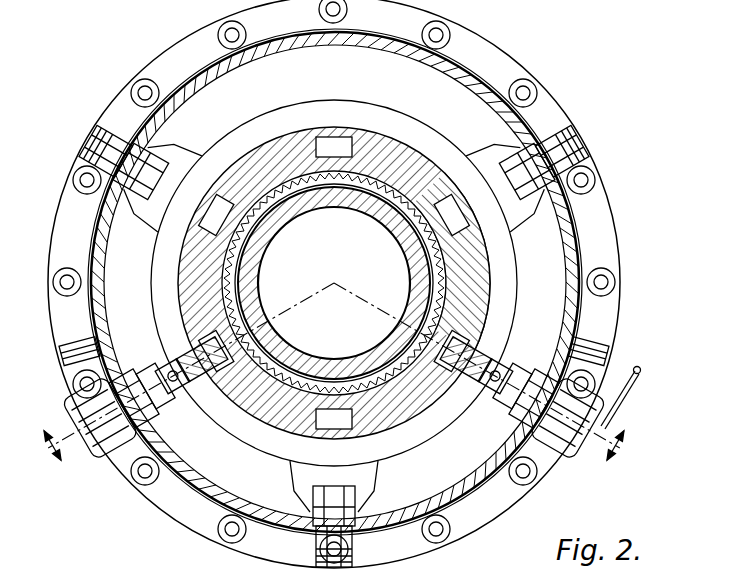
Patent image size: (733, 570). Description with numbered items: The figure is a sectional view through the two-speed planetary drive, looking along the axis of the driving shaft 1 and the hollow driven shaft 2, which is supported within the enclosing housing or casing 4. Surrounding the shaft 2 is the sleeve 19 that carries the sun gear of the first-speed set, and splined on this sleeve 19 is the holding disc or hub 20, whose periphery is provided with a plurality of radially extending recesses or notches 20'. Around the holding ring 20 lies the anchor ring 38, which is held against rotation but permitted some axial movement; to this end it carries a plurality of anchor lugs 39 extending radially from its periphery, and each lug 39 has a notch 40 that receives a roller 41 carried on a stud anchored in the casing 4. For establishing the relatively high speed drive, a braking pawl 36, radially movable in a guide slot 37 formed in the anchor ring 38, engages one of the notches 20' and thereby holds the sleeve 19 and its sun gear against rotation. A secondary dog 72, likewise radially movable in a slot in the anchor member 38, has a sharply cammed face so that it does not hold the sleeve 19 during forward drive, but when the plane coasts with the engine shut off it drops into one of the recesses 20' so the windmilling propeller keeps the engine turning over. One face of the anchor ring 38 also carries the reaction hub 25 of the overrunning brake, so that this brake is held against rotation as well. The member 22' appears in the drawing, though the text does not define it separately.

The driving shaft 1 is at (345, 371).
The shaft 2 is at (344, 197).
The housing or casing 4 is at (352, 40).
The sleeve 19 is at (374, 184).
The holding disc or hub 20 is at (336, 265).
The radially extending recesses or notches 20' is at (356, 285).
The key 22' is at (202, 388).
The reaction hub 25 is at (291, 108).
The braking pawl 36 is at (504, 366).
The guide slot 37 is at (467, 380).
The anchor ring 38 is at (476, 246).
The anchor lugs 39 is at (145, 210).
The notch 40 is at (159, 157).
The roller 41 is at (125, 170).
The secondary dog 72 is at (167, 350).